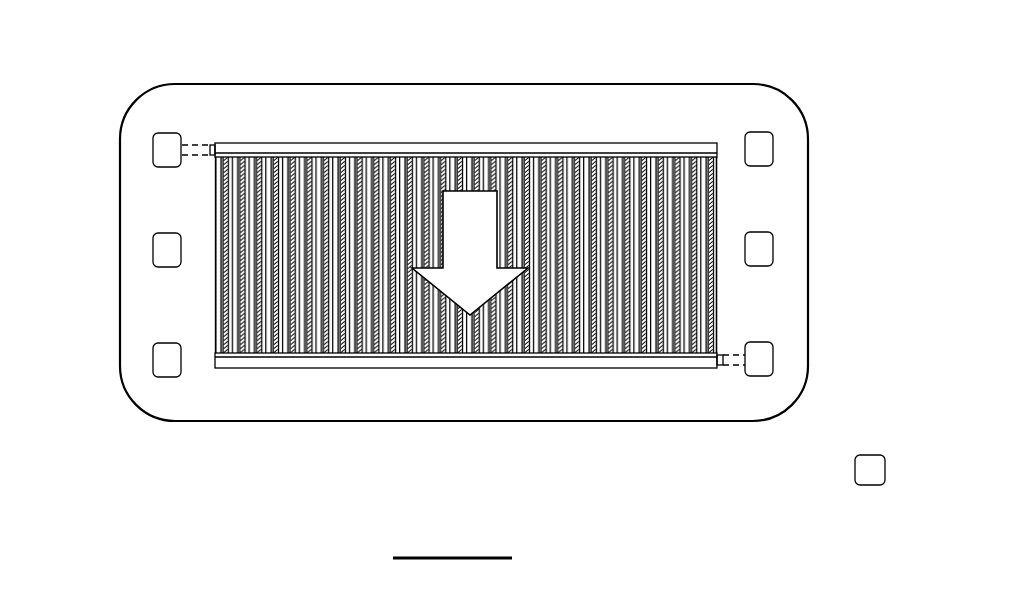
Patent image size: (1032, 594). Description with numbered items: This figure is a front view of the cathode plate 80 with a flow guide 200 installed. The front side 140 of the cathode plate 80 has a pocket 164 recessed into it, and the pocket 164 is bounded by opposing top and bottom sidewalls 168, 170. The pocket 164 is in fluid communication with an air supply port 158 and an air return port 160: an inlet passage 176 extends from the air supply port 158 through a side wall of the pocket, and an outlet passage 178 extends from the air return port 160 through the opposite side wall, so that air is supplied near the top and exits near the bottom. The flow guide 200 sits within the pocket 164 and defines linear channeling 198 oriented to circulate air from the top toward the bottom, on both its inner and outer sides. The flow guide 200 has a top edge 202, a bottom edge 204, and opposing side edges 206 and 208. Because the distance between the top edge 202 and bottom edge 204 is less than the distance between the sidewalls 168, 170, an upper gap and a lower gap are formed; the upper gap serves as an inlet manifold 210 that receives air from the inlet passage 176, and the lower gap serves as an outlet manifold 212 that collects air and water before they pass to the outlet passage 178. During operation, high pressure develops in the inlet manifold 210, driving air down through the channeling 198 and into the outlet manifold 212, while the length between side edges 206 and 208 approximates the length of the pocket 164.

The cathode plate 80 is at (822, 83).
The front side 140 is at (680, 98).
The air supply port 158 is at (170, 150).
The air return port 160 is at (757, 360).
The pocket 164 is at (372, 118).
The top sidewall 168 is at (637, 145).
The bottom sidewall 170 is at (270, 362).
The inlet passage 176 is at (200, 143).
The outlet passage 178 is at (723, 368).
The channeling 198 is at (552, 160).
The flow guide 200 is at (605, 330).
The top edge 202 is at (467, 155).
The bottom edge 204 is at (532, 358).
The side edge 206 is at (217, 296).
The side edge 208 is at (717, 214).
The inlet manifold 210 is at (285, 152).
The outlet manifold 212 is at (358, 360).